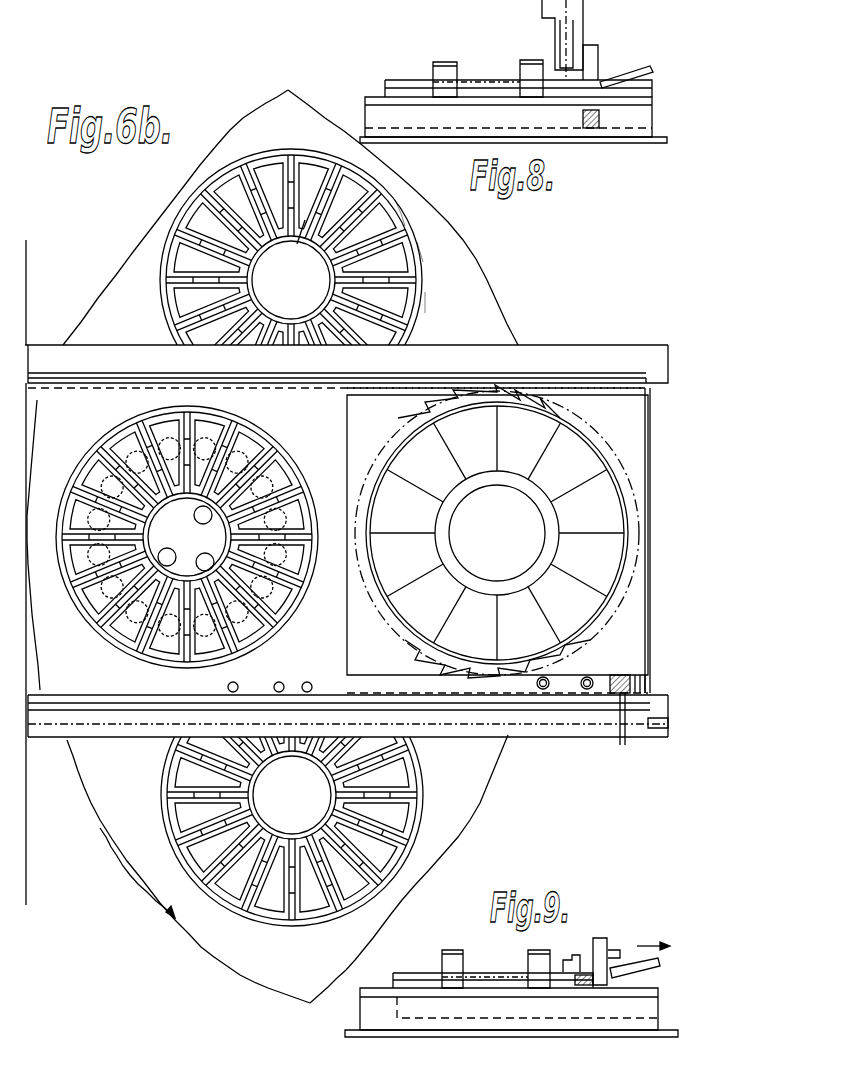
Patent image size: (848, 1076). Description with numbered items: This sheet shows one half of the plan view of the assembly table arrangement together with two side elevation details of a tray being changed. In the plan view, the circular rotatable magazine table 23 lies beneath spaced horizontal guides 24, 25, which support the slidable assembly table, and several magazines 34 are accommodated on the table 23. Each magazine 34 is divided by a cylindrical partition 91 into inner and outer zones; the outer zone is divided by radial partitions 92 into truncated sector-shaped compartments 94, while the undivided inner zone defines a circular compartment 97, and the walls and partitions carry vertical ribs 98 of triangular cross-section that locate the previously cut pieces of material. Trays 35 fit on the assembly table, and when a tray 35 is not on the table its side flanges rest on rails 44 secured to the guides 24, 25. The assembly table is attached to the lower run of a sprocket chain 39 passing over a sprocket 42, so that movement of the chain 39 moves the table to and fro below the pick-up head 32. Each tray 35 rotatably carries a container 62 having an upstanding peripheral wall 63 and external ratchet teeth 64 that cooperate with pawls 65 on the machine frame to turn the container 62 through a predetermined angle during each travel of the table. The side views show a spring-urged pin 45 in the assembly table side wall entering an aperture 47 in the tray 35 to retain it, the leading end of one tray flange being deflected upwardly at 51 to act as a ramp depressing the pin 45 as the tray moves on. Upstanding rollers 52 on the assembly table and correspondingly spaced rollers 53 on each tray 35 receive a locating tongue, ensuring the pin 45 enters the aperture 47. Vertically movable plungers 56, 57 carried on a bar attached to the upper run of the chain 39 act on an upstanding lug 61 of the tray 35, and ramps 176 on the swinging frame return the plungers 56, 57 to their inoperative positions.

In FIG. 6B, the magazine table 23 is at (150, 228).
In FIG. 6B, the horizontal guide 24 is at (580, 357).
In FIG. 6B, the horizontal guide 25 is at (530, 737).
In FIG. 6B, the pick-up head 32 is at (146, 343).
In FIG. 6B, the magazine 34 is at (304, 537).
In FIG. 6B, the tray 35 is at (626, 426).
In FIG. 6B, the sprocket chain 39 is at (130, 726).
In FIG. 6B, the sprocket 42 is at (660, 728).
In FIG. 6B, the rail 44 is at (656, 382).
In FIG. 8, the pin 45 is at (596, 98).
In FIG. 9, the pin 45 is at (605, 1005).
In FIG. 6B, the aperture 47 is at (620, 675).
In FIG. 8, the aperture 47 is at (635, 68).
In FIG. 8, the upwardly deflected flange end 51 is at (606, 128).
In FIG. 9, the upwardly deflected flange end 51 is at (652, 985).
In FIG. 8, the upstanding roller 52 is at (520, 68).
In FIG. 9, the upstanding roller 52 is at (528, 955).
In FIG. 8, the upstanding roller 53 is at (459, 65).
In FIG. 8, the plunger 56 is at (553, 45).
In FIG. 8, the plunger 57 is at (600, 50).
In FIG. 9, the plunger 57 is at (604, 938).
In FIG. 6B, the upstanding lug 61 is at (612, 695).
In FIG. 8, the upstanding lug 61 is at (583, 128).
In FIG. 9, the upstanding lug 61 is at (576, 958).
In FIG. 6B, the container 62 is at (620, 572).
In FIG. 6B, the upstanding peripheral wall 63 is at (627, 515).
In FIG. 6B, the ratchet teeth 64 is at (410, 658).
In FIG. 6B, the pawl 65 is at (37, 400).
In FIG. 6B, the cylindrical partition 91 is at (250, 285).
In FIG. 6B, the radial partition 92 is at (425, 313).
In FIG. 6B, the compartment 94 is at (405, 226).
In FIG. 6B, the circular compartment 97 is at (408, 222).
In FIG. 6B, the vertical rib 98 is at (423, 262).
In FIG. 9, the ramp 176 is at (622, 950).